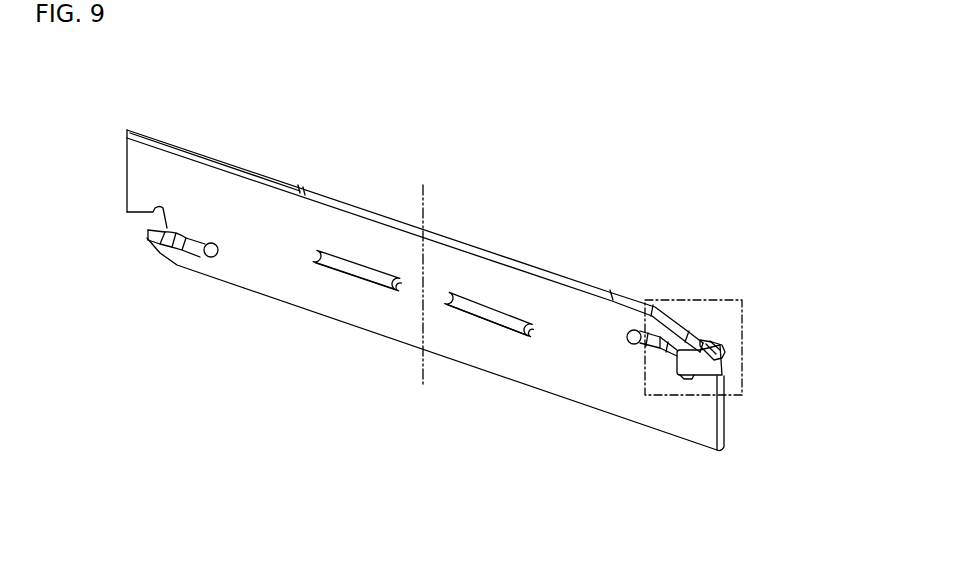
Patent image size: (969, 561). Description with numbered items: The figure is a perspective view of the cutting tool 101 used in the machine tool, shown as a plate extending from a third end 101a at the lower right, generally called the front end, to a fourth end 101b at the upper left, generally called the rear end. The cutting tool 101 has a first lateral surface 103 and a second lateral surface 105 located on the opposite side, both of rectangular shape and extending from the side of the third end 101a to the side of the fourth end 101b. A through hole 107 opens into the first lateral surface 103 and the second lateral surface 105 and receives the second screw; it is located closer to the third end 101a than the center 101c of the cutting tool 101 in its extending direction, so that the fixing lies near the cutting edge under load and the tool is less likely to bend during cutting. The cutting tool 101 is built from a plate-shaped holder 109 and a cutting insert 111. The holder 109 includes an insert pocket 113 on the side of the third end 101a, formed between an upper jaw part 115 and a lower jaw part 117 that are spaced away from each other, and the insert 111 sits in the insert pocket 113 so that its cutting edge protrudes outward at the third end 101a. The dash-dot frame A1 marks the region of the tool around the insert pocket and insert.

The cutting tool 101 is at (480, 168).
The third end 101a is at (722, 420).
The fourth end 101b is at (125, 153).
The center of the cutting tool 101c is at (428, 273).
The first lateral surface 103 is at (258, 250).
The second lateral surface 105 is at (260, 170).
The through hole 107 is at (487, 320).
The holder 109 is at (572, 382).
The cutting insert 111 is at (697, 362).
The insert pocket 113 is at (145, 212).
The upper jaw part 115 is at (690, 335).
The lower jaw part 117 is at (698, 387).
The region A1 is at (717, 297).